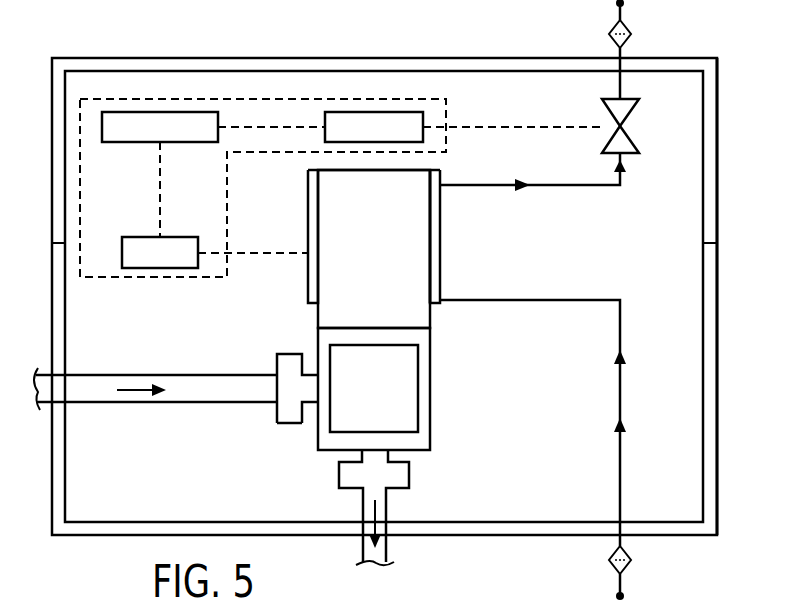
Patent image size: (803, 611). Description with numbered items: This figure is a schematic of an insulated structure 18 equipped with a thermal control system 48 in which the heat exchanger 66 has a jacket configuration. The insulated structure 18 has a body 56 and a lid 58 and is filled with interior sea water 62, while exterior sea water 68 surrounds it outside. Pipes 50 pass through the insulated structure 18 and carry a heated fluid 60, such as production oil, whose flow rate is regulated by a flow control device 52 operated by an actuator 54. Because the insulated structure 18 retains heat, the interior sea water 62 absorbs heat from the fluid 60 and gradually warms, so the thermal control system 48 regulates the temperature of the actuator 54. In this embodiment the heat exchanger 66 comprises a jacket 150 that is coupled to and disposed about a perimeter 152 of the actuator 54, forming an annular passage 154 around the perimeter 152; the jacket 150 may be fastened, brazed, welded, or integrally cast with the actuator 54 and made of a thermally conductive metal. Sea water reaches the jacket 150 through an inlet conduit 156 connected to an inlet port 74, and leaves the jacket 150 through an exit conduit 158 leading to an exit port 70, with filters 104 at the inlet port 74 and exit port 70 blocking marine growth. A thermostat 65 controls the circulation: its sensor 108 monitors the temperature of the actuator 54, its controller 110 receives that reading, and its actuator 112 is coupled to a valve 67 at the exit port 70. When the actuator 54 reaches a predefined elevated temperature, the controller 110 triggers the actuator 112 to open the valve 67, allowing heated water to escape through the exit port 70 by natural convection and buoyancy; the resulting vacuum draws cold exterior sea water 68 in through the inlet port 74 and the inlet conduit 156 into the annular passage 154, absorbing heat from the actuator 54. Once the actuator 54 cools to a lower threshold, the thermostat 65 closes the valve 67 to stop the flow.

The insulated structure 18 is at (748, 192).
The thermal control system 48 is at (150, 42).
The pipes 50 is at (228, 403).
The flow control device 52 is at (431, 386).
The actuator 54 is at (318, 318).
The body 56 is at (718, 392).
The lid 58 is at (718, 135).
The fluid 60 is at (132, 403).
The interior sea water 62 is at (656, 255).
The thermostat 65 is at (228, 215).
The heat exchanger 66 is at (456, 231).
The valve 67 is at (630, 140).
The exterior sea water 68 is at (768, 277).
The exit port 70 is at (624, 10).
The inlet port 74 is at (624, 588).
The filters 104 is at (630, 40).
The sensor 108 is at (147, 236).
The controller 110 is at (148, 143).
The actuator 112 is at (424, 115).
The jacket 150 is at (441, 178).
The perimeter 152 is at (430, 198).
The annular passage 154 is at (430, 261).
The inlet conduit 156 is at (528, 302).
The exit conduit 158 is at (558, 190).